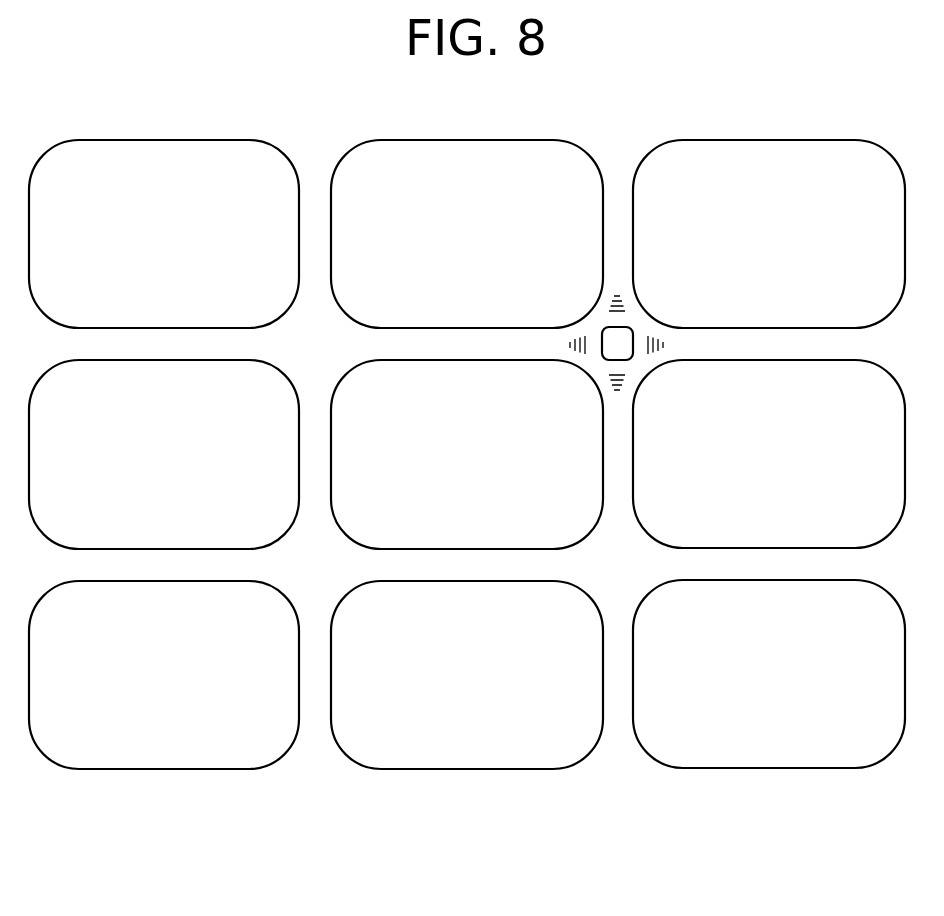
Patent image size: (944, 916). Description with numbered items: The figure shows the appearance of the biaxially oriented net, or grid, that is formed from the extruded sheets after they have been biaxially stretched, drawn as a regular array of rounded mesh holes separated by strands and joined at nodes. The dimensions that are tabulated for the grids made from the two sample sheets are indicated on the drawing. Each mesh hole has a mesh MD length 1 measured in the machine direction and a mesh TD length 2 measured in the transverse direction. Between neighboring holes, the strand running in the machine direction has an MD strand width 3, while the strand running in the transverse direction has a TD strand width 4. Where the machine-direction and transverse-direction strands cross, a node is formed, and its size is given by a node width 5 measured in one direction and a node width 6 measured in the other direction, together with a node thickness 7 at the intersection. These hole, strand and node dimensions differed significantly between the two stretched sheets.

The mesh MD length 1 is at (163, 141).
The mesh TD length 2 is at (332, 235).
The MD strand width 3 is at (368, 456).
The TD strand width 4 is at (164, 513).
The node width 5 is at (285, 538).
The node width 6 is at (648, 537).
The node thickness 7 is at (622, 348).